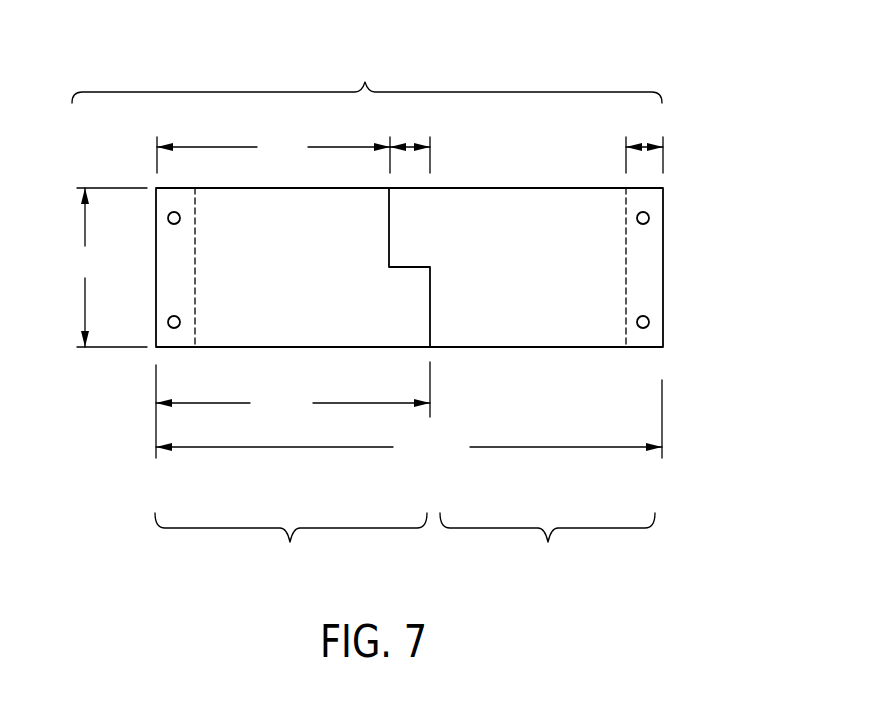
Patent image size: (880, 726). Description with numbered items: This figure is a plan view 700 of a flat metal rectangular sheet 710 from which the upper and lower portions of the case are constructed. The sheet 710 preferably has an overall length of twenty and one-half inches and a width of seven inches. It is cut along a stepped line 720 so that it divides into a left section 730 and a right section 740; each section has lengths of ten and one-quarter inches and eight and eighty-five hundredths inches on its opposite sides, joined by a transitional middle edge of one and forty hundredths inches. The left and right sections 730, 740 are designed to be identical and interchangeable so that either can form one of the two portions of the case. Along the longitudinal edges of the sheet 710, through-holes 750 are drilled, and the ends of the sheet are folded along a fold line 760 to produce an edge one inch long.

The plan view 700 is at (695, 116).
The flat metal rectangular sheet 710 is at (367, 111).
The step notch 720 is at (436, 308).
The left section 730 is at (292, 382).
The right section 740 is at (547, 541).
The through-holes 750 is at (672, 222).
The fold line 760 is at (620, 262).